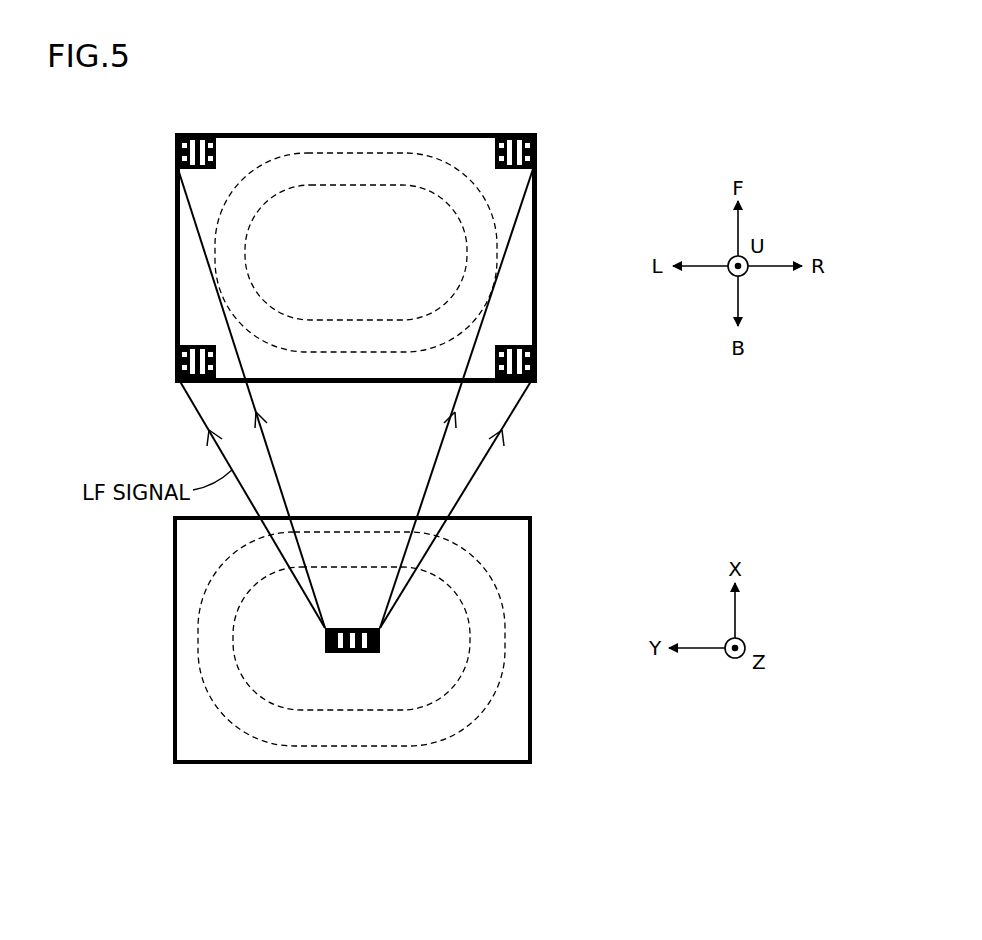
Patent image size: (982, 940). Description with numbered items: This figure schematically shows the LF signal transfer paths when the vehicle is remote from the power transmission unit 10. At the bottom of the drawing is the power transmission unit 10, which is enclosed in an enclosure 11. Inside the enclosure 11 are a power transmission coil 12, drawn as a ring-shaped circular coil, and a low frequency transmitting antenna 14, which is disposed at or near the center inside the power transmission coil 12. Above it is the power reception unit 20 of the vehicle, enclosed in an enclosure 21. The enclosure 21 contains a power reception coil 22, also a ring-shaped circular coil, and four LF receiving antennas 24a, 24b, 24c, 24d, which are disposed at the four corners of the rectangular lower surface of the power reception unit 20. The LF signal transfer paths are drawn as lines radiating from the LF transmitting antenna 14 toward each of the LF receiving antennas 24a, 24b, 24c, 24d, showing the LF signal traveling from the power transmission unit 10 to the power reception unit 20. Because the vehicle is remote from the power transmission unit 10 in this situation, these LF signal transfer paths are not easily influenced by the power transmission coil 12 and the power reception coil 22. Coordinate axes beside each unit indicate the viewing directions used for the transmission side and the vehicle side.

The power transmission unit 10 is at (361, 600).
The enclosure 11 is at (532, 644).
The power transmission coil 12 is at (360, 532).
The LF transmitting antenna 14 is at (325, 640).
The power reception unit 20 is at (361, 221).
The enclosure 21 is at (538, 264).
The power reception coil 22 is at (360, 153).
The LF receiving antenna 24a is at (178, 152).
The LF receiving antenna 24b is at (533, 152).
The LF receiving antenna 24c is at (178, 361).
The LF receiving antenna 24d is at (538, 361).